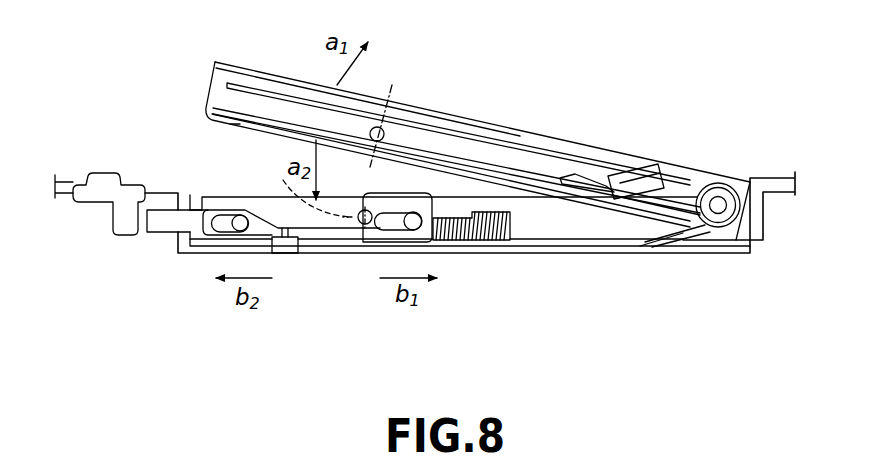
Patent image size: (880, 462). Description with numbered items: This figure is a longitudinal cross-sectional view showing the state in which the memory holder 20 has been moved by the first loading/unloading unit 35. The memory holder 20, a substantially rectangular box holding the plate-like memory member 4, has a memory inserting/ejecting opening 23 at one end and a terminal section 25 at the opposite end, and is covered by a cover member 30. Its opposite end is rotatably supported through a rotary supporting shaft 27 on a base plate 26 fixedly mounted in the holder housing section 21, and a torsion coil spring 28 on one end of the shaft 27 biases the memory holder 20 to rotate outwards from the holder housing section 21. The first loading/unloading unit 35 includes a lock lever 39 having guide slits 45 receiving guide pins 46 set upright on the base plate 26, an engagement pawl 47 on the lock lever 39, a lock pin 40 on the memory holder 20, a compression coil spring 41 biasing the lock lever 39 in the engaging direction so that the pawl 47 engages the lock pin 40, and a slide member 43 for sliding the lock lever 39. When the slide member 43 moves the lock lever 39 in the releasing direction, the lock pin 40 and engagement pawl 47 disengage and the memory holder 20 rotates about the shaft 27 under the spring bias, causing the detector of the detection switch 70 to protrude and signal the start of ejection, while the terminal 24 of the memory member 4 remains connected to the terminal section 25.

The memory member 4 is at (215, 92).
The memory holder 20 is at (235, 122).
The holder housing section 21 is at (190, 196).
The memory inserting/ejecting opening 23 is at (212, 110).
The terminal 24 is at (608, 177).
The terminal section 25 is at (640, 185).
The base plate 26 is at (587, 224).
The rotary supporting shaft 27 is at (718, 214).
The torsion coil spring 28 is at (683, 250).
The cover member 30 is at (468, 105).
The first loading/unloading unit 35 is at (178, 252).
The lock lever 39 is at (315, 240).
The lock pin 40 is at (369, 135).
The compression coil spring 41 is at (493, 246).
The slide member 43 is at (100, 180).
The guide slit 45 is at (224, 230).
The guide pin 46 is at (240, 216).
The engagement pawl 47 is at (361, 211).
The detection switch 70 is at (284, 253).